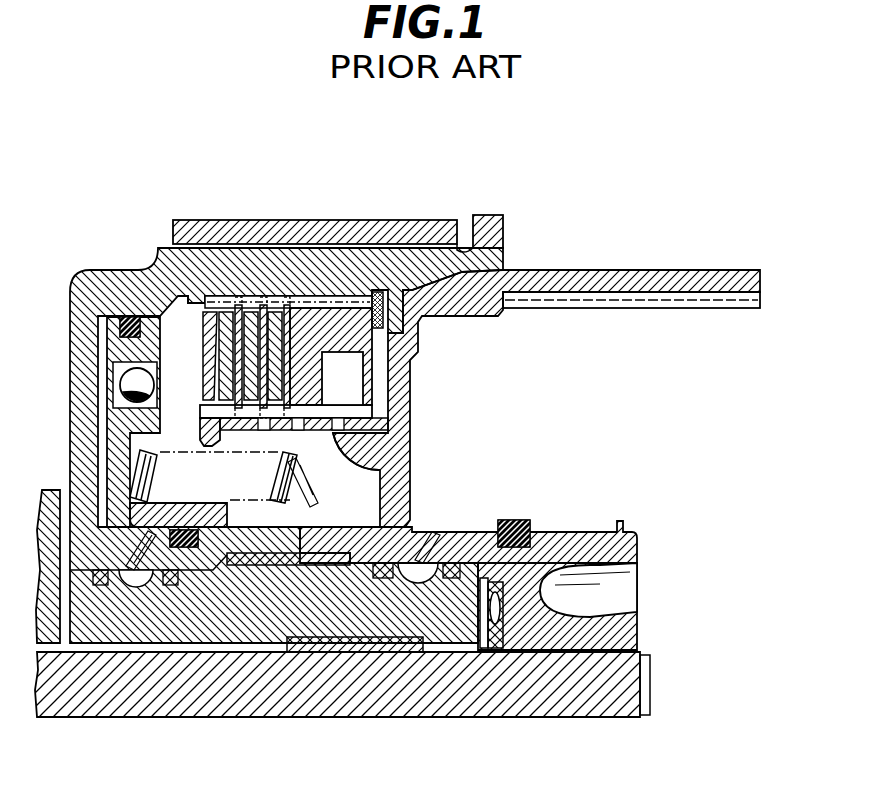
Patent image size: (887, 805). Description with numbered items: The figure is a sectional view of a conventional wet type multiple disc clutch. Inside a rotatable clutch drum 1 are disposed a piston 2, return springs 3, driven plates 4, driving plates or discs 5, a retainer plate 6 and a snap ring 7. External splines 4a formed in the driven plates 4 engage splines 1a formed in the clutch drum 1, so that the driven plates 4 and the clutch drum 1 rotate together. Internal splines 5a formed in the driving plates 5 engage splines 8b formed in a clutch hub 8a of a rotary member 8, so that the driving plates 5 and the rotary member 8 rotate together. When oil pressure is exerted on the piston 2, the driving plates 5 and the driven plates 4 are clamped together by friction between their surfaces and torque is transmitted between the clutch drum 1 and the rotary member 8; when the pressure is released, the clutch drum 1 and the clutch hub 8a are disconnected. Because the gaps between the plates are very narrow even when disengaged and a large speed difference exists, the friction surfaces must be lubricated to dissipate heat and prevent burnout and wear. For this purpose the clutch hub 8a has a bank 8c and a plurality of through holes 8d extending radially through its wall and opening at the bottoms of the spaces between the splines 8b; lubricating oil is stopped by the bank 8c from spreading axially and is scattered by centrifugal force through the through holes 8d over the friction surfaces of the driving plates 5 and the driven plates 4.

The clutch drum 1 is at (85, 282).
The splines 1a is at (202, 303).
The piston 2 is at (147, 316).
The return springs 3 is at (130, 448).
The driven plates 4 is at (220, 322).
The external splines 4a is at (220, 296).
The driving plates 5 is at (245, 380).
The internal splines 5a is at (230, 418).
The retainer plate 6 is at (347, 330).
The snap ring 7 is at (384, 293).
The rotary member 8 is at (422, 323).
The clutch hub 8a is at (382, 468).
The splines 8b is at (210, 416).
The bank 8c is at (204, 430).
The through holes 8d is at (256, 479).